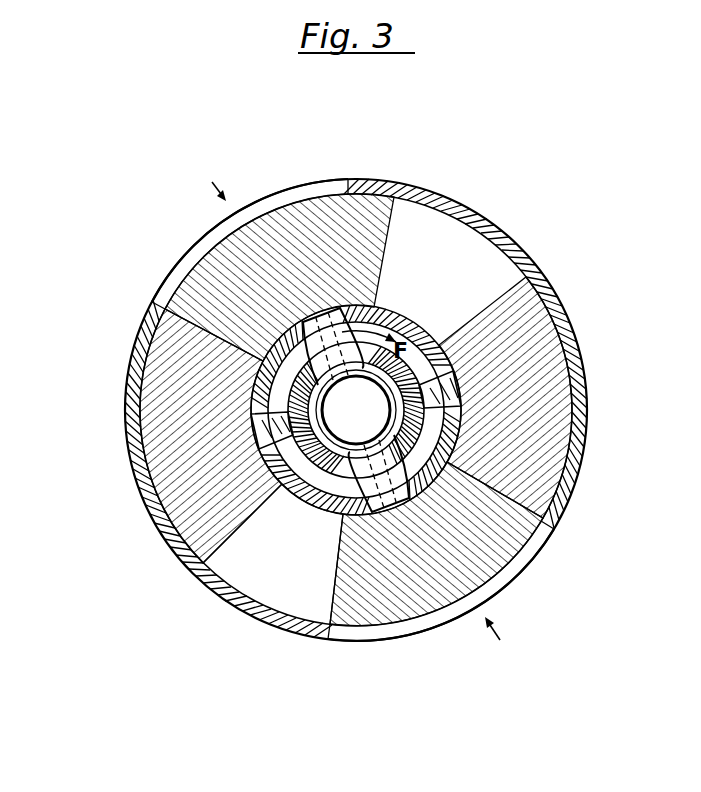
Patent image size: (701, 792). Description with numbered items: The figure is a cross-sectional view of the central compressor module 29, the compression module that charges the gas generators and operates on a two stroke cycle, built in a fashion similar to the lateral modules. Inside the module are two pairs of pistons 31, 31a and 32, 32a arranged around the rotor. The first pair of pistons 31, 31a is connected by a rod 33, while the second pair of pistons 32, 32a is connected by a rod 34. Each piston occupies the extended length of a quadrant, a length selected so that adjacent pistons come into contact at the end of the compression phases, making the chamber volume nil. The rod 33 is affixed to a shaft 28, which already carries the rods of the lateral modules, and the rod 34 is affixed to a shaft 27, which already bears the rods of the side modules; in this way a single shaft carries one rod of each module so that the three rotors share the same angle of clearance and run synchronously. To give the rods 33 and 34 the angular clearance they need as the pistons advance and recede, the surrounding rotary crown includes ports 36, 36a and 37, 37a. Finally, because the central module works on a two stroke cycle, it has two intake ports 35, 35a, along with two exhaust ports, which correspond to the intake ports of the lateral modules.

The shaft 27 is at (308, 497).
The shaft 28 is at (367, 423).
The central compressor module 29 is at (589, 407).
The piston 31 is at (322, 215).
The piston 31a is at (450, 563).
The piston 32 is at (508, 328).
The piston 32a is at (190, 405).
The rod 33 is at (380, 308).
The rod 34 is at (422, 355).
The intake port 35 is at (425, 627).
The intake port 35a is at (254, 196).
The port of rotary crown 36 is at (346, 303).
The port of rotary crown 36a is at (373, 522).
The port of rotary crown 37 is at (452, 407).
The port of rotary crown 37a is at (268, 462).